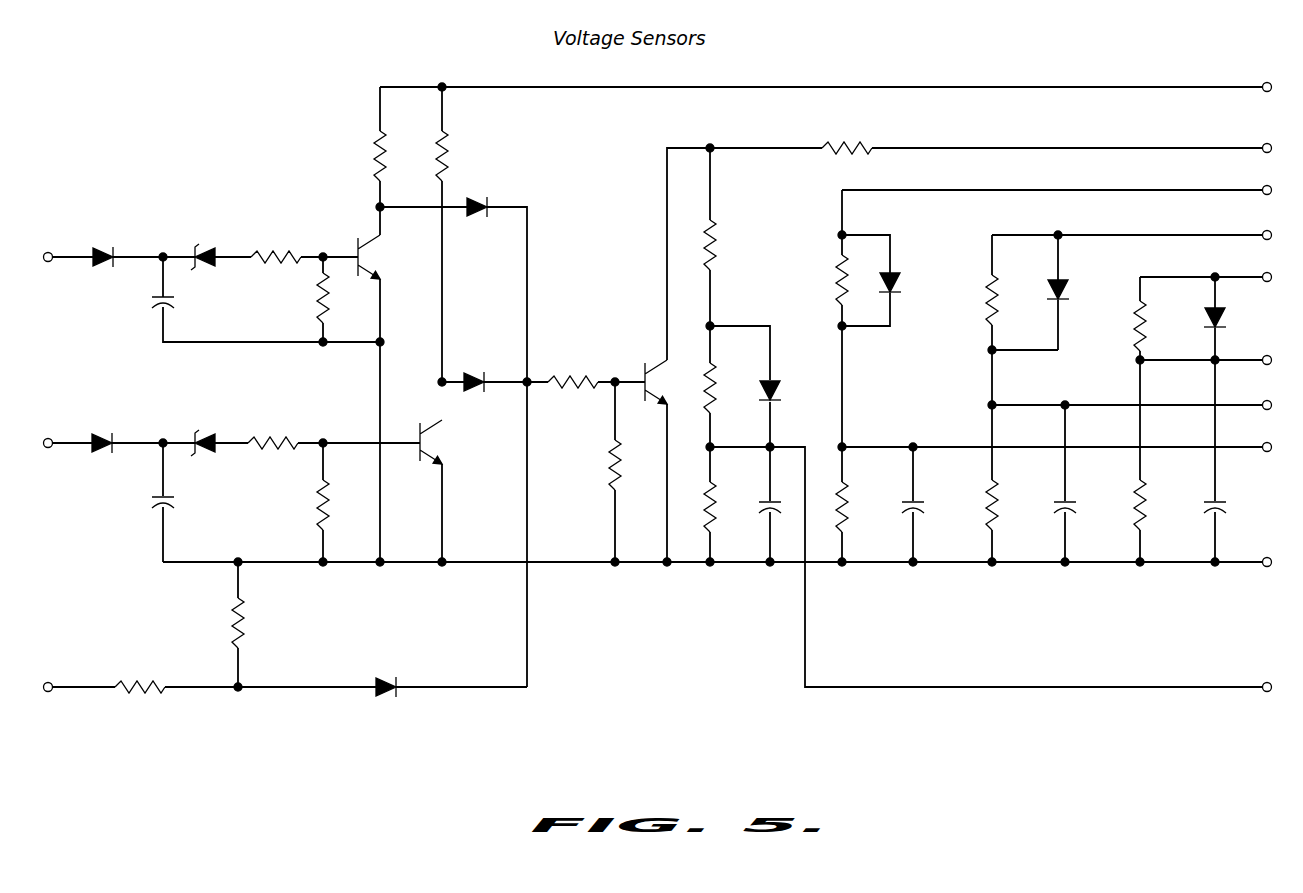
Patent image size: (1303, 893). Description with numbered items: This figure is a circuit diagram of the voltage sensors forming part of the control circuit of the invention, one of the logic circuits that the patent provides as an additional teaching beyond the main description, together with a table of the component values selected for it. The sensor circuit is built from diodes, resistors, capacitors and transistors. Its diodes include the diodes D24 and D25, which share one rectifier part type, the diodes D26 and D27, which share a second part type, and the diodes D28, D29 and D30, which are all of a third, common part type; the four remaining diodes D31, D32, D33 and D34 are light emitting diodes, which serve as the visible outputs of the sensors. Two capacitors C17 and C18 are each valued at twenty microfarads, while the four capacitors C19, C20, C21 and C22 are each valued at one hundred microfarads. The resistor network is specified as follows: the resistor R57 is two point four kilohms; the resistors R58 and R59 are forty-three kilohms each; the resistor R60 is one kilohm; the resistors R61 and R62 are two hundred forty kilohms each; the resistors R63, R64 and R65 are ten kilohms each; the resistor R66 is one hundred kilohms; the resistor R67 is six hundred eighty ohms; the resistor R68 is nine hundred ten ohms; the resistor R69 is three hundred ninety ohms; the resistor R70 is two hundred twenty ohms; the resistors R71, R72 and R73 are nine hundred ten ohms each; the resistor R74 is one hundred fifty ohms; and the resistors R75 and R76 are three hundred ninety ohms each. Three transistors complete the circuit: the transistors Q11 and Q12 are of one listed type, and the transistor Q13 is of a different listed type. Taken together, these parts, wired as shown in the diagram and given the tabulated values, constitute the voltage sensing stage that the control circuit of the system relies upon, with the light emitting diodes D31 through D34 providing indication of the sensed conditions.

The diode D24 is at (100, 250).
The diode D25 is at (100, 434).
The diode D26 is at (212, 243).
The diode D27 is at (212, 430).
The diode D28 is at (380, 672).
The diode D29 is at (478, 196).
The diode D30 is at (470, 374).
The light emitting diode D31 is at (793, 410).
The light emitting diode D32 is at (910, 302).
The light emitting diode D33 is at (1078, 310).
The light emitting diode D34 is at (1248, 332).
The capacitor C17 is at (150, 305).
The capacitor C18 is at (150, 500).
The capacitor C19 is at (762, 512).
The capacitor C20 is at (905, 512).
The capacitor C21 is at (1058, 512).
The capacitor C22 is at (1206, 512).
The resistor R57 is at (138, 672).
The resistor R58 is at (272, 265).
The resistor R59 is at (270, 434).
The resistor R60 is at (248, 618).
The resistor R61 is at (313, 300).
The resistor R62 is at (312, 512).
The resistor R63 is at (372, 148).
The resistor R64 is at (458, 148).
The resistor R65 is at (560, 372).
The resistor R66 is at (605, 466).
The resistor R67 is at (722, 242).
The resistor R68 is at (722, 380).
The resistor R69 is at (722, 492).
The resistor R70 is at (858, 140).
The resistor R71 is at (836, 283).
The resistor R72 is at (985, 310).
The resistor R73 is at (1132, 330).
The resistor R74 is at (846, 494).
The resistor R75 is at (996, 494).
The resistor R76 is at (1144, 494).
The transistor Q11 is at (372, 256).
The transistor Q12 is at (434, 446).
The transistor Q13 is at (642, 364).